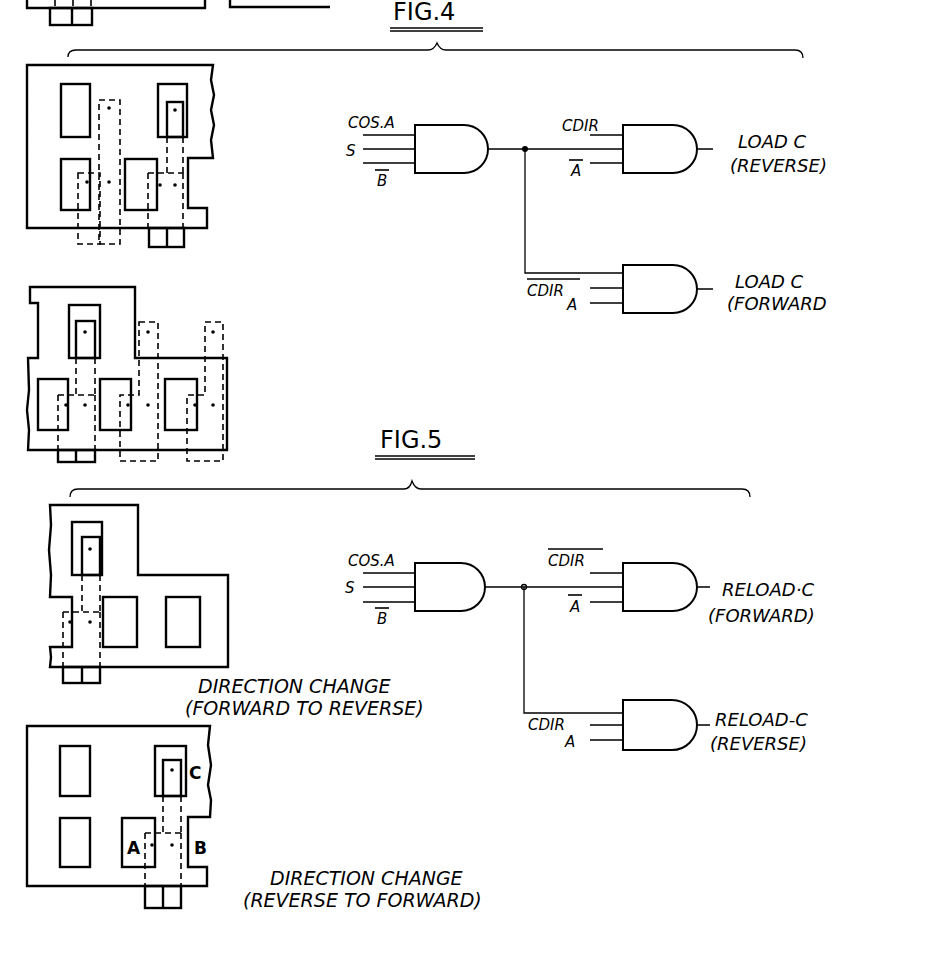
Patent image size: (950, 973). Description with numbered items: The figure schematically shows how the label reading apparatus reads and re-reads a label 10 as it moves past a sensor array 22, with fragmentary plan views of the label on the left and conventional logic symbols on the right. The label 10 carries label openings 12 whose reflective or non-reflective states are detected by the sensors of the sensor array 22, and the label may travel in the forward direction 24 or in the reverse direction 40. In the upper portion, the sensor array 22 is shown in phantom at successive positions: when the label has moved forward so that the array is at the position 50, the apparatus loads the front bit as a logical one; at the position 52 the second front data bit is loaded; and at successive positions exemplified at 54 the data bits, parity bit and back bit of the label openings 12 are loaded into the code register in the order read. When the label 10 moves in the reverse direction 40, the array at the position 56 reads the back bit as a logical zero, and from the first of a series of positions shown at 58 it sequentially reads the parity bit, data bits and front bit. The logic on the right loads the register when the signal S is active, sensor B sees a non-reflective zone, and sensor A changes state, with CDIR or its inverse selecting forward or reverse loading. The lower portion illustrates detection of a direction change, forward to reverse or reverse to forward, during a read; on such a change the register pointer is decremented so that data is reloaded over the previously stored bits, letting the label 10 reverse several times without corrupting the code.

In FIG. 5, the label 10 is at (146, 518).
In FIG. 4, the label openings 12 is at (227, 89).
In FIG. 4, the sensor array 22 is at (94, 17).
In FIG. 5, the sensor array 22 is at (70, 687).
In FIG. 4, the forward direction 24 is at (125, 473).
In FIG. 5, the forward direction 24 is at (175, 680).
In FIG. 4, the reverse direction 40 is at (113, 35).
In FIG. 5, the reverse direction 40 is at (177, 692).
In FIG. 4, the sensor array position (phantom) 50 is at (227, 342).
In FIG. 4, the sensor array position (phantom) 52 is at (163, 338).
In FIG. 4, the sensor array position (phantom) 54 is at (100, 244).
In FIG. 4, the sensor array position (phantom) 56 is at (77, 206).
In FIG. 4, the sensor array position (phantom) 58 is at (178, 251).